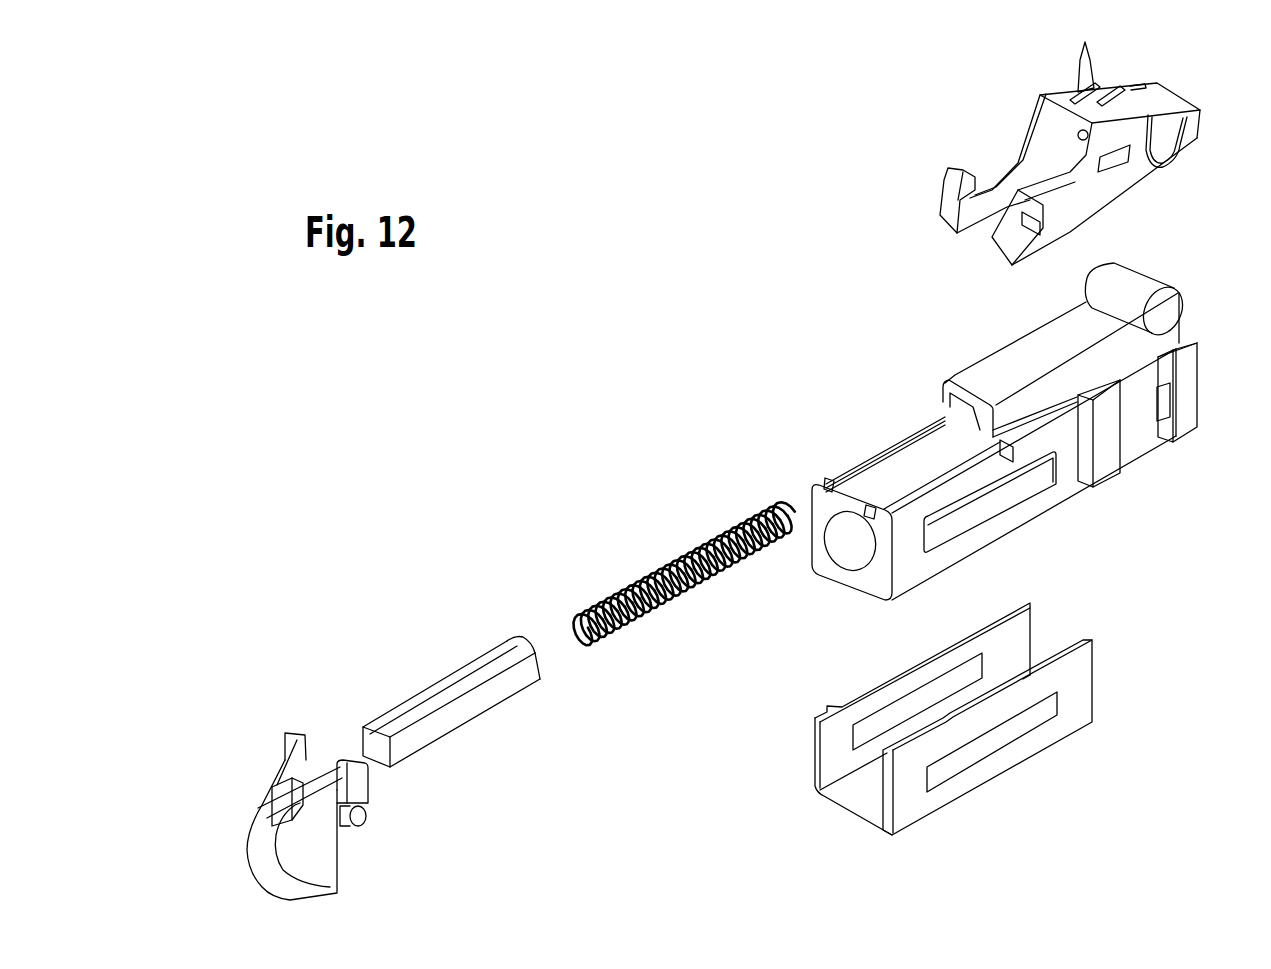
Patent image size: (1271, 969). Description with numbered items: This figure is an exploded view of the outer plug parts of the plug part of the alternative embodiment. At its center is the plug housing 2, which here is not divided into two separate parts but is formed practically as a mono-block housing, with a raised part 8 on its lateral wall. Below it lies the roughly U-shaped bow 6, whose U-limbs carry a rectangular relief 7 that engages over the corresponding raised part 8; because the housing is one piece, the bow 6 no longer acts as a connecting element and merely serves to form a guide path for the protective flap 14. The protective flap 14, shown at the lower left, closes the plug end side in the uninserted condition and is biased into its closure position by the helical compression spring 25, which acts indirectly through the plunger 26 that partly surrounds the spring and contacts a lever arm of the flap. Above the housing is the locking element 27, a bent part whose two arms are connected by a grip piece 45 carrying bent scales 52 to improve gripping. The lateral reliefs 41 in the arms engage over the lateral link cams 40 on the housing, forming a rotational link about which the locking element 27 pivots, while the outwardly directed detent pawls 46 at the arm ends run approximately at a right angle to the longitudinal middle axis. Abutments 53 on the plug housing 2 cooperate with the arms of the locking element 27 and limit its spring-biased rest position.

The plug housing 2 is at (1147, 453).
The bow 6 is at (862, 806).
The rectangular relief 7 is at (985, 745).
The raised part 8 is at (1062, 493).
The protective flap 14 is at (318, 878).
The helical compression spring 25 is at (662, 566).
The plunger 26 is at (452, 690).
The locking element 27 is at (1037, 131).
The link cam 40 is at (1175, 300).
The lateral relief 41 is at (1170, 142).
The grip piece 45 is at (1160, 96).
The detent pawl 46 is at (955, 177).
The bent scale 52 is at (1085, 45).
The abutment 53 is at (1033, 383).